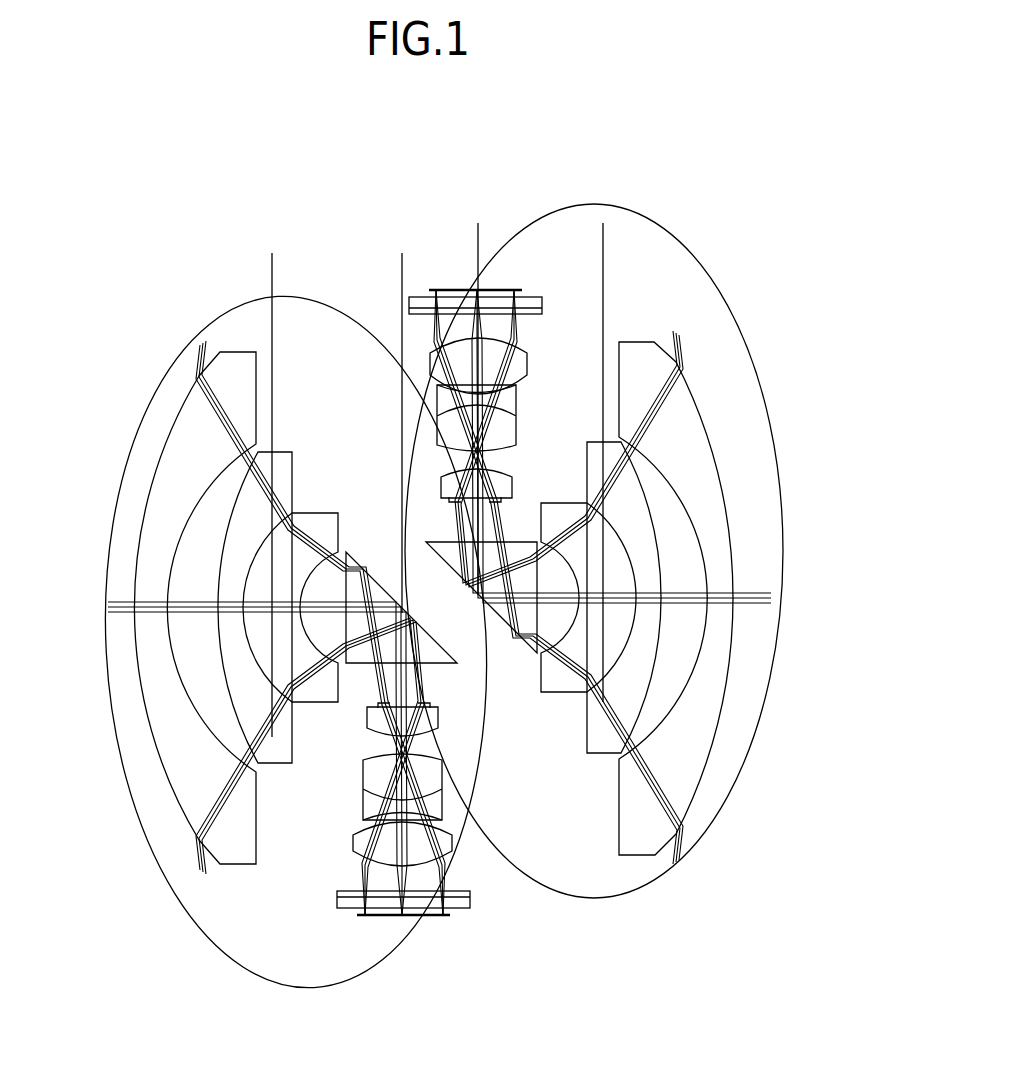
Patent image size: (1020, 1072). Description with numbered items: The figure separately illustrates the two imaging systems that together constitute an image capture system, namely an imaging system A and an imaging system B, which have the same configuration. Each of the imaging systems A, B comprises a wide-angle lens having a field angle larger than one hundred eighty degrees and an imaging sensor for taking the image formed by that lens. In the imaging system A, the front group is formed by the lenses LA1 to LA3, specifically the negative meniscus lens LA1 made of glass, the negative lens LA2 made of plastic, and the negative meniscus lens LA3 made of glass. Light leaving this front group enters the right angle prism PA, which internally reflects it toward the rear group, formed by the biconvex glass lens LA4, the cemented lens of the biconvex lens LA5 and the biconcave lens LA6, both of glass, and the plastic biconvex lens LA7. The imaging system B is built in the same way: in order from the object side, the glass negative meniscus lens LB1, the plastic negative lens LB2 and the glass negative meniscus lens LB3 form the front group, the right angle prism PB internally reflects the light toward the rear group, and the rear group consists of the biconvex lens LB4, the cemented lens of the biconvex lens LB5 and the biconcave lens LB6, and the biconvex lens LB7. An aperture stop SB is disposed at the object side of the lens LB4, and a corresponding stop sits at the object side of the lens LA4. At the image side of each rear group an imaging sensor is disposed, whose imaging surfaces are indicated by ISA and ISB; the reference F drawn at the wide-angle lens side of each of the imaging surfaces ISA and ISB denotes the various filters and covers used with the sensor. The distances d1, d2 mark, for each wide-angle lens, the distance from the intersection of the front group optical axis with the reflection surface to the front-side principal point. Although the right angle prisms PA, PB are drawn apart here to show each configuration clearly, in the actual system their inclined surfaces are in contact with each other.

The imaging system A is at (146, 412).
The imaging system B is at (728, 296).
The distance d1 is at (402, 275).
The distance d2 is at (478, 242).
The negative meniscus lens LA1 is at (246, 860).
The negative lens LA2 is at (283, 451).
The negative meniscus lens LA3 is at (313, 512).
The biconvex lens LA4 is at (370, 730).
The biconvex lens LA5 is at (363, 784).
The biconcave lens LA6 is at (363, 808).
The biconvex lens LA7 is at (356, 846).
The right angle prism PA is at (362, 662).
The filters and covers F is at (470, 900).
The imaging surface ISA is at (427, 918).
The negative meniscus lens LB1 is at (628, 838).
The negative lens LB2 is at (603, 752).
The negative meniscus lens LB3 is at (563, 690).
The biconvex lens LB4 is at (513, 483).
The biconvex lens LB5 is at (518, 434).
The biconcave lens LB6 is at (518, 400).
The biconvex lens LB7 is at (528, 362).
The right angle prism PB is at (440, 553).
The aperture stop SB is at (456, 505).
The imaging surface ISB is at (441, 288).